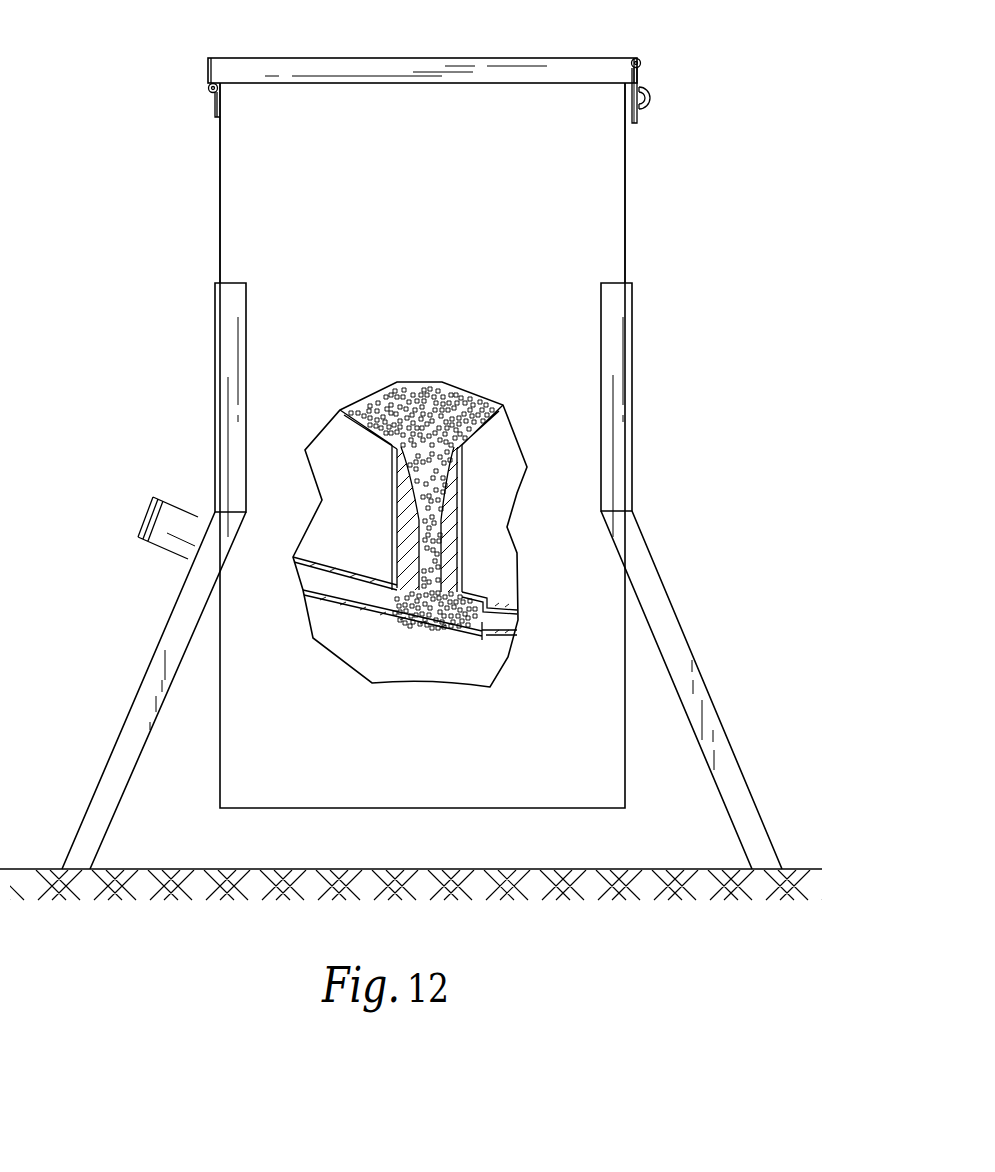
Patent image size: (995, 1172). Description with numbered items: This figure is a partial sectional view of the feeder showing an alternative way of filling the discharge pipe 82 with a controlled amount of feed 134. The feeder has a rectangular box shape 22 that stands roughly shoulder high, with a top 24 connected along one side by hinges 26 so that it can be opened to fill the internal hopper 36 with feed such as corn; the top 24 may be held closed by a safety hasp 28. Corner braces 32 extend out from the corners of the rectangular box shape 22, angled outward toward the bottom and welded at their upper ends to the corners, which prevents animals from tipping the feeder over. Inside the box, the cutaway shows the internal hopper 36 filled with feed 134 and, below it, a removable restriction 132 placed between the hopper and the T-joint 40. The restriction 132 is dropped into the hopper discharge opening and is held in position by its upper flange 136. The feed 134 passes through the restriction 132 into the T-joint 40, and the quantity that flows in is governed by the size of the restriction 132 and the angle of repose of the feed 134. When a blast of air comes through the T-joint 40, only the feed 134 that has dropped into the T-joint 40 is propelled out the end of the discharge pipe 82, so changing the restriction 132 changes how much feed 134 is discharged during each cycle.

The rectangular box shape 22 is at (440, 232).
The top 24 is at (444, 58).
The hinges 26 is at (212, 92).
The safety hasp 28 is at (650, 96).
The corner braces 32 is at (132, 712).
The internal hopper 36 is at (382, 438).
The T-joint 40 is at (482, 636).
The discharge pipe 82 is at (187, 504).
The restriction 132 is at (397, 505).
The feed 134 is at (470, 388).
The upper flange 136 is at (397, 476).